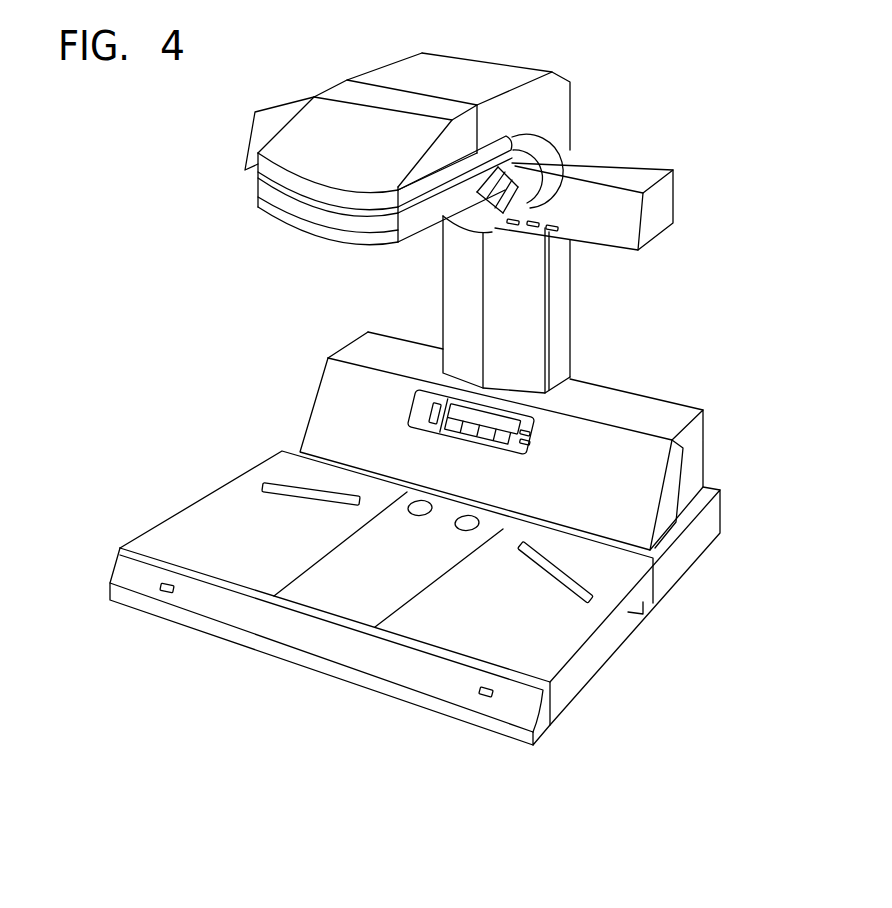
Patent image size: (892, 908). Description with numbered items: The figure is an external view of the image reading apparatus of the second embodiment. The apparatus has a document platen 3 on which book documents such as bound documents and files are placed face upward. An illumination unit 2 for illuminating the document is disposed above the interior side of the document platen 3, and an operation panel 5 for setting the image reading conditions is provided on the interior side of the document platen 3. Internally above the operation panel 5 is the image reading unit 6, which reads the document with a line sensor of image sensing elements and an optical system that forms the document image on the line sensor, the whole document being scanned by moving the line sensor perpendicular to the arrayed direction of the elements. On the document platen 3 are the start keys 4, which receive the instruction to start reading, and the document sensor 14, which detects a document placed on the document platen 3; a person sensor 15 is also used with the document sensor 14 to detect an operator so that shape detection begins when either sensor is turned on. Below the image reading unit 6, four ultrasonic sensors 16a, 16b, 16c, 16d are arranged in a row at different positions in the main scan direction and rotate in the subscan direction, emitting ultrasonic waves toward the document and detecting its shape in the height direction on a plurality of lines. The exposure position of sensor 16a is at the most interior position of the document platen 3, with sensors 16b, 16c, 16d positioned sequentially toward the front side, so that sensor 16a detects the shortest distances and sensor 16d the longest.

The illumination unit 2 is at (650, 170).
The document platen 3 is at (200, 508).
The start keys 4 is at (272, 480).
The operation panel 5 is at (555, 412).
The image reading unit 6 is at (282, 133).
The document sensor 14 is at (410, 516).
The person sensor 15 is at (158, 582).
The ultrasonic sensor 16a is at (522, 203).
The ultrasonic sensor 16b is at (538, 190).
The ultrasonic sensor 16c is at (520, 168).
The ultrasonic sensor 16d is at (495, 222).